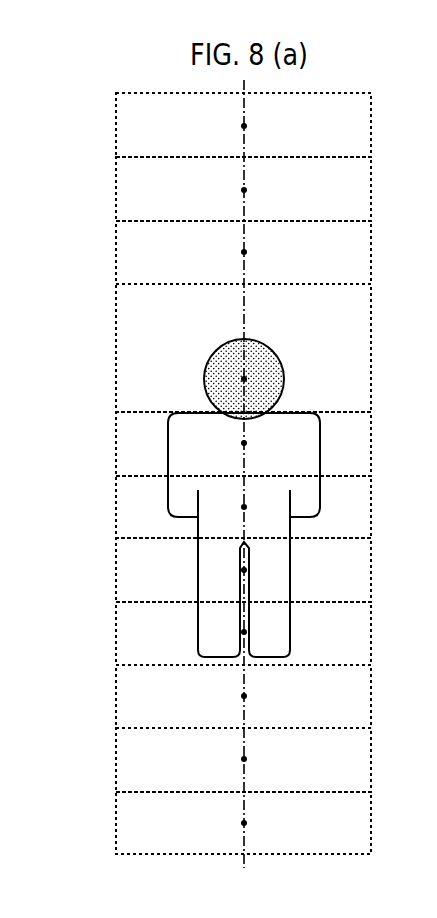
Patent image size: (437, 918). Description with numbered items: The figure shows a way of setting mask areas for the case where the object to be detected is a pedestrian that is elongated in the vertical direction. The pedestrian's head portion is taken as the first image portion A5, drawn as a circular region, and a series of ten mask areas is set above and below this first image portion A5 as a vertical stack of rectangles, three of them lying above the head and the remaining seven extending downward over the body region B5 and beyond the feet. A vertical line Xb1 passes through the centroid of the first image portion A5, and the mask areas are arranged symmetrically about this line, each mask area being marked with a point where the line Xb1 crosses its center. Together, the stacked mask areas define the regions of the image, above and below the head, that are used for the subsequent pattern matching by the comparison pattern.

The vertical line Xb1 is at (244, 489).
The first image portion A5 is at (275, 353).
The body region B5 is at (320, 443).